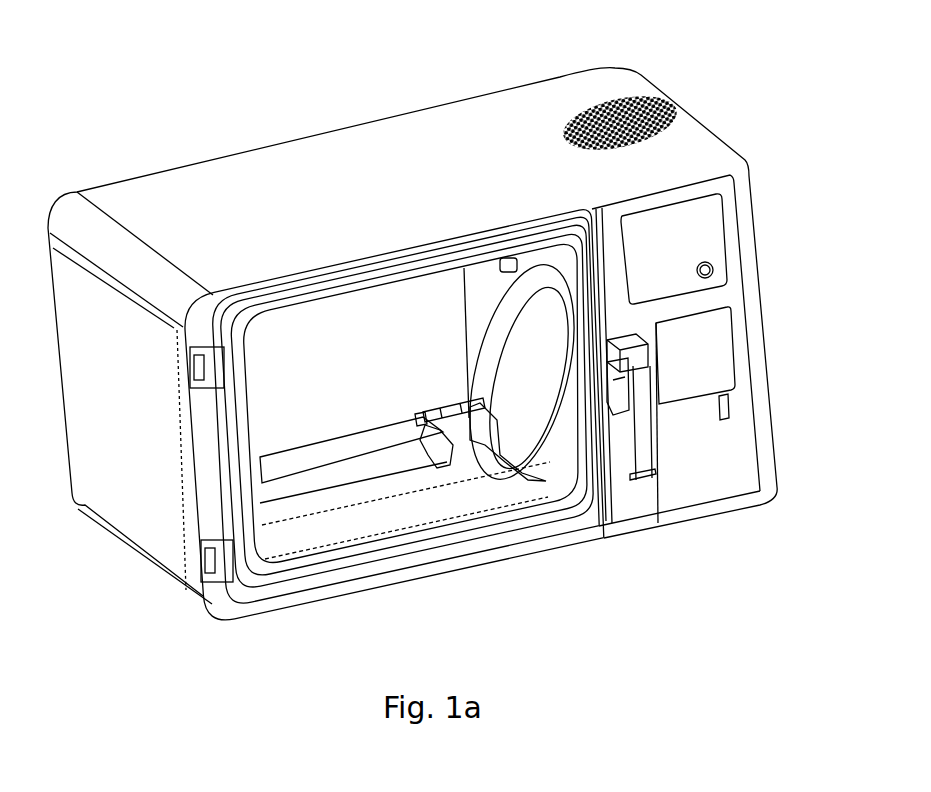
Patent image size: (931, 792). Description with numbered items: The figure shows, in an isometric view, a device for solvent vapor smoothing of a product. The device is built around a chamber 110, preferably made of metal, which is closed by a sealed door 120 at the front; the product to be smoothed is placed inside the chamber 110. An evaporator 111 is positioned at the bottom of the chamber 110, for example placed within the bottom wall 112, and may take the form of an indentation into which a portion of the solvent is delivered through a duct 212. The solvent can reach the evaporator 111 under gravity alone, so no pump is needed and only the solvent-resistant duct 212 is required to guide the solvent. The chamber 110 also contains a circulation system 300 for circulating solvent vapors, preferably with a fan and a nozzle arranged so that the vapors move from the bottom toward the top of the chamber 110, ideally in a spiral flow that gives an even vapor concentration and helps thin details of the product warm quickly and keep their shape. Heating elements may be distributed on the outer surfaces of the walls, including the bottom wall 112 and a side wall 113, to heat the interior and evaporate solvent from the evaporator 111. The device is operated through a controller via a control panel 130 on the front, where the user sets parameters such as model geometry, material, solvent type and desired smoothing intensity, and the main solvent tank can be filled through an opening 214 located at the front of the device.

The chamber 110 is at (380, 345).
The sealed door 120 is at (220, 360).
The side wall 113 is at (543, 275).
The control panel 130 is at (700, 251).
The opening 214 is at (703, 377).
The circulation system 300 is at (553, 396).
The duct 212 is at (430, 422).
The evaporator 111 is at (313, 482).
The bottom wall 112 is at (395, 508).